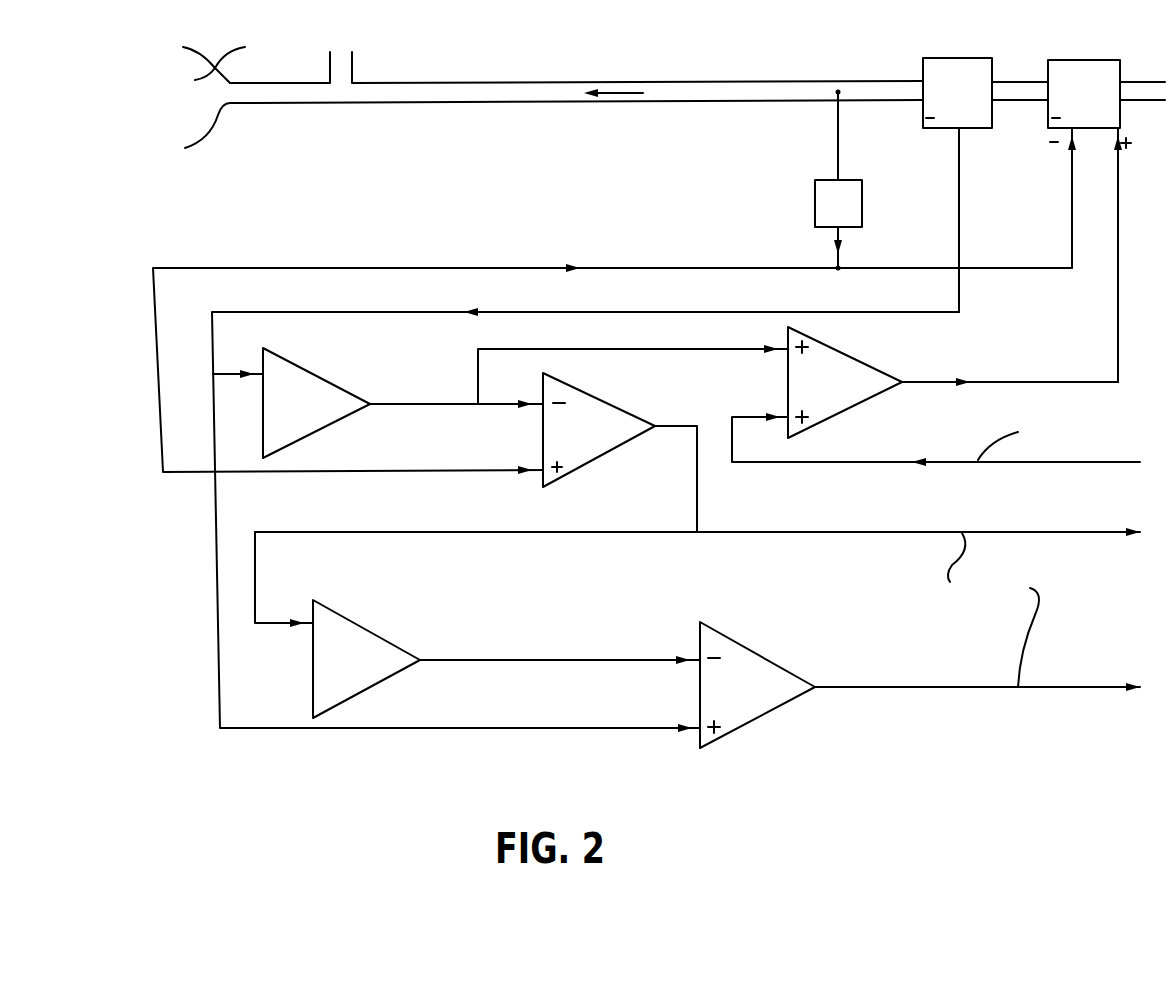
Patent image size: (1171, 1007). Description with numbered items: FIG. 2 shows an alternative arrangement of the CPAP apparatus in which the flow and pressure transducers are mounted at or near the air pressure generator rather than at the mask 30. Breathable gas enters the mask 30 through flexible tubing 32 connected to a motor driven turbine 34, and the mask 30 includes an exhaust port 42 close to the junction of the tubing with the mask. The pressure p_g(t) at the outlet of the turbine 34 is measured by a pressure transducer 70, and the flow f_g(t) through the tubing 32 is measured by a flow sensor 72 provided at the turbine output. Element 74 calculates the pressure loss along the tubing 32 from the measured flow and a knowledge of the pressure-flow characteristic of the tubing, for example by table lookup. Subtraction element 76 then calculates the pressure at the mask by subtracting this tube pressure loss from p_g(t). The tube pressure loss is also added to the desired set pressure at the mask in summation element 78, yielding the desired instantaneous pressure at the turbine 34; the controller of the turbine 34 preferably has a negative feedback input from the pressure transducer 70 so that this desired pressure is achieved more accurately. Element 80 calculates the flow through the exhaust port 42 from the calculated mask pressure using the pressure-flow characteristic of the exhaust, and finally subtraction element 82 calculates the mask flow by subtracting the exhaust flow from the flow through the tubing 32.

The mask 30 is at (231, 65).
The flexible tubing 32 is at (543, 100).
The motor driven turbine 34 is at (1045, 118).
The exhaust port 42 is at (356, 68).
The pressure transducer 70 is at (815, 207).
The flow sensor 72 is at (918, 120).
The pressure loss calculation element 74 is at (287, 378).
The subtraction element 76 is at (583, 410).
The summation element 78 is at (835, 362).
The exhaust flow calculation element 80 is at (343, 627).
The subtraction element 82 is at (745, 675).